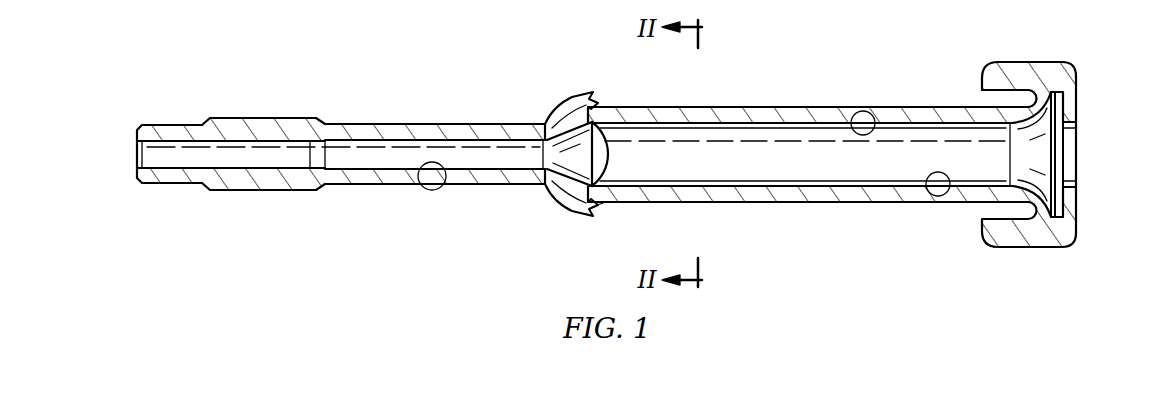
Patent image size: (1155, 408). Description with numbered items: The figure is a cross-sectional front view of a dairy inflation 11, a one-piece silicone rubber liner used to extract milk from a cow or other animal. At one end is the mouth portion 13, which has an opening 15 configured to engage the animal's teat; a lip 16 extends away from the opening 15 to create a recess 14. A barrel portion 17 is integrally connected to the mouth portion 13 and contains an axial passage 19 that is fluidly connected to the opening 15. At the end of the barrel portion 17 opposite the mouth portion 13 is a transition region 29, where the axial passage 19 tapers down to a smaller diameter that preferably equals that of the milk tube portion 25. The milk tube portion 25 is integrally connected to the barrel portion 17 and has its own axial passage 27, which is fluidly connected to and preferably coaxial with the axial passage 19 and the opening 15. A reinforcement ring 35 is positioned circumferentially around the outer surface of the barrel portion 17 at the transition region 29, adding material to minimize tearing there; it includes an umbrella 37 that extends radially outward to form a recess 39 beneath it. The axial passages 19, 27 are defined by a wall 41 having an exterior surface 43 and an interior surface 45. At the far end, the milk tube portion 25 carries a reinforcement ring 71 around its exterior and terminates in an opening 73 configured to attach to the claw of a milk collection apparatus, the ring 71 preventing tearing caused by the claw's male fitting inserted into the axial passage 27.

The dairy inflation 11 is at (450, 80).
The mouth portion 13 is at (1033, 62).
The recess 14 is at (965, 95).
The opening 15 is at (1078, 156).
The lip 16 is at (988, 234).
The barrel portion 17 is at (783, 108).
The axial passage 19 is at (857, 112).
The milk tube portion 25 is at (396, 124).
The axial passage 27 is at (440, 184).
The transition region 29 is at (558, 115).
The reinforcement ring 35 is at (562, 198).
The umbrella 37 is at (588, 218).
The recess 39 is at (610, 210).
The wall 41 is at (757, 192).
The exterior surface 43 is at (854, 203).
The interior surface 45 is at (939, 196).
The reinforcement ring 71 is at (259, 117).
The opening 73 is at (137, 153).